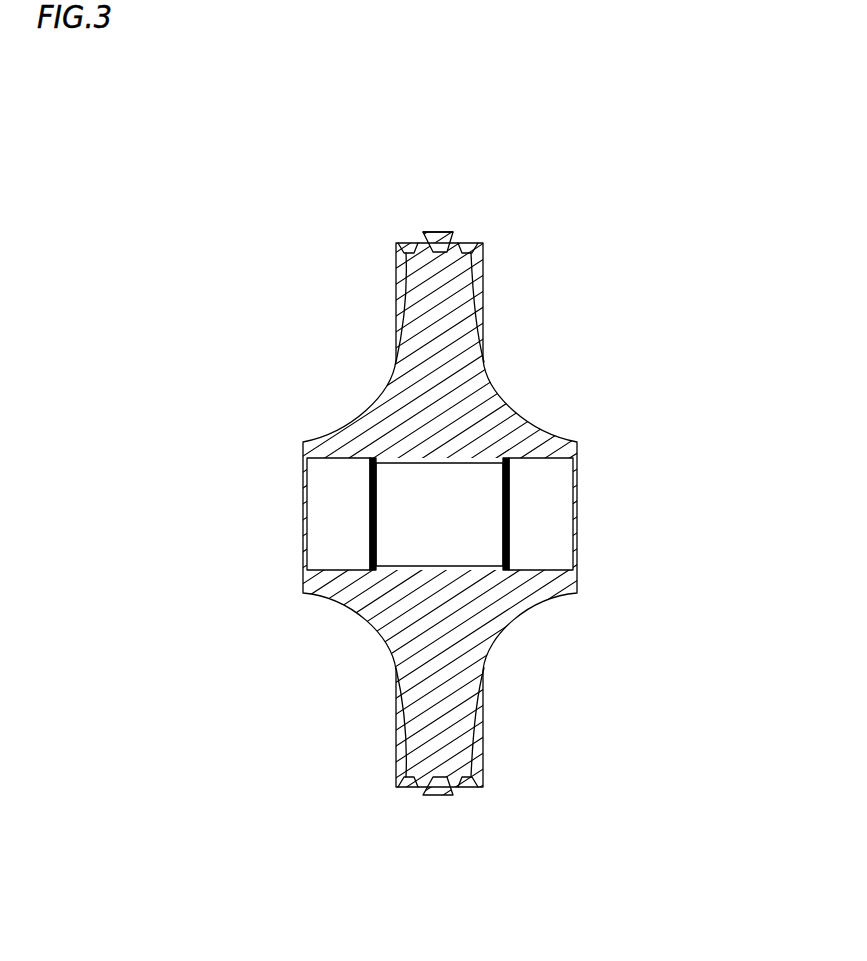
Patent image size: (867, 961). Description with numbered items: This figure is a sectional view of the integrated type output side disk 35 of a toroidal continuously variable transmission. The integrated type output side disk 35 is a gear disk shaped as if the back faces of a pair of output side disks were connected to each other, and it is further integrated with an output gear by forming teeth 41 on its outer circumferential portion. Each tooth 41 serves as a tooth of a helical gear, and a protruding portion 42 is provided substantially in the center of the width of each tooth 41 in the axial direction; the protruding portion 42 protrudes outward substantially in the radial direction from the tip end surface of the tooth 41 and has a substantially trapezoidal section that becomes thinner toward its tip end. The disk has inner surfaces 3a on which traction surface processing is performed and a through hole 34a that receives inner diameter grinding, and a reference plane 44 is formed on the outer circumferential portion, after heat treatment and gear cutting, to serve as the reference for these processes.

The inner surface 3a is at (510, 405).
The through hole 34a is at (550, 462).
The integrated type output side disk 35 is at (480, 290).
The tooth 41 is at (467, 241).
The protruding portion 42 is at (438, 237).
The reference plane 44 is at (428, 232).